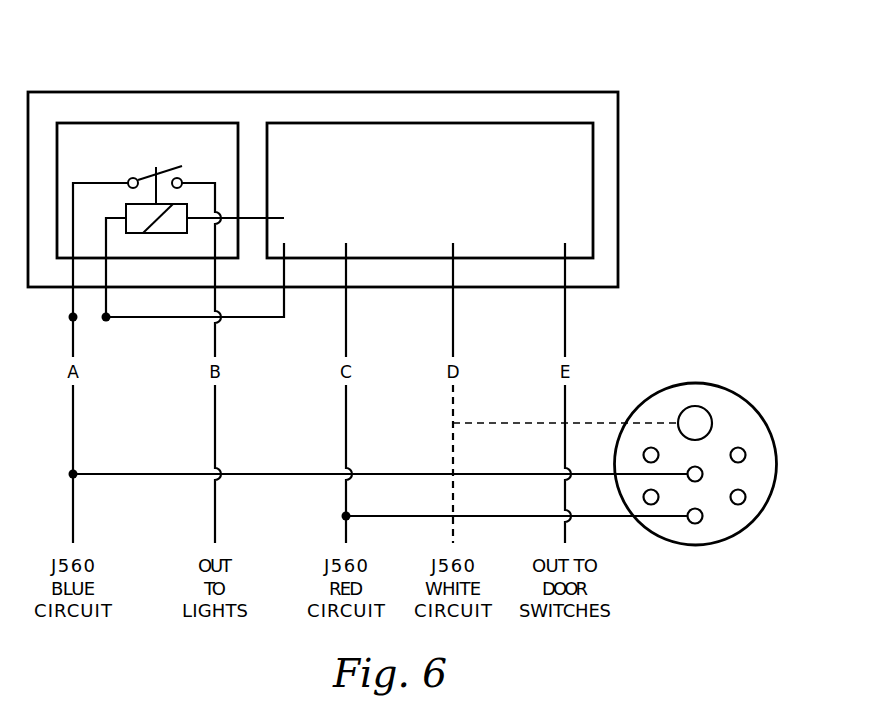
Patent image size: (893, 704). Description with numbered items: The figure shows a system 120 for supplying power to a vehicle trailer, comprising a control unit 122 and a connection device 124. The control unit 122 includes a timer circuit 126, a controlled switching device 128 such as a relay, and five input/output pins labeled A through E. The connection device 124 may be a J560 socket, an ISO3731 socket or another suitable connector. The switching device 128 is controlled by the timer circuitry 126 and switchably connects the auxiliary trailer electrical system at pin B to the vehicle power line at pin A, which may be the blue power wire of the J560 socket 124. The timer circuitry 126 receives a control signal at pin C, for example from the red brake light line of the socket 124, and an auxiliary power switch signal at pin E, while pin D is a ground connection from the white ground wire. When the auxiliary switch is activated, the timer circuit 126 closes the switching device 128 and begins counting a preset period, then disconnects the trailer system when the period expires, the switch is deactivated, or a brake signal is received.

The vehicle lighting control system 120 is at (703, 118).
The control unit 122 is at (618, 187).
The connection device 124 is at (710, 541).
The timer circuit 126 is at (503, 137).
The controlled switching device 128 is at (106, 123).